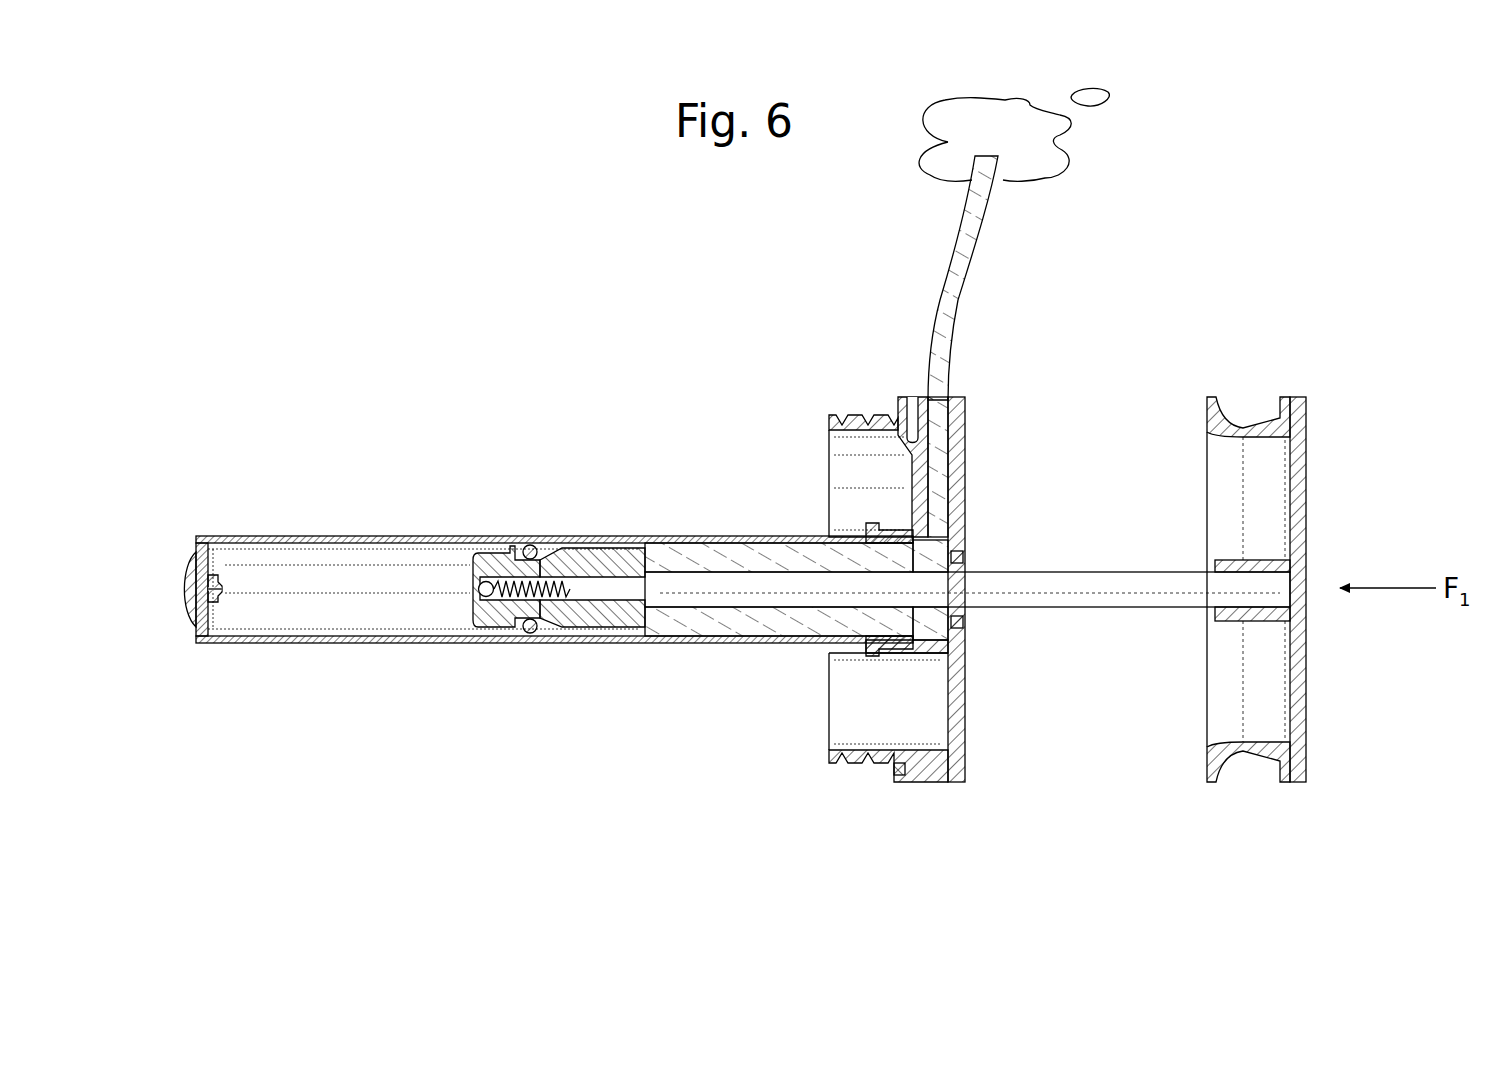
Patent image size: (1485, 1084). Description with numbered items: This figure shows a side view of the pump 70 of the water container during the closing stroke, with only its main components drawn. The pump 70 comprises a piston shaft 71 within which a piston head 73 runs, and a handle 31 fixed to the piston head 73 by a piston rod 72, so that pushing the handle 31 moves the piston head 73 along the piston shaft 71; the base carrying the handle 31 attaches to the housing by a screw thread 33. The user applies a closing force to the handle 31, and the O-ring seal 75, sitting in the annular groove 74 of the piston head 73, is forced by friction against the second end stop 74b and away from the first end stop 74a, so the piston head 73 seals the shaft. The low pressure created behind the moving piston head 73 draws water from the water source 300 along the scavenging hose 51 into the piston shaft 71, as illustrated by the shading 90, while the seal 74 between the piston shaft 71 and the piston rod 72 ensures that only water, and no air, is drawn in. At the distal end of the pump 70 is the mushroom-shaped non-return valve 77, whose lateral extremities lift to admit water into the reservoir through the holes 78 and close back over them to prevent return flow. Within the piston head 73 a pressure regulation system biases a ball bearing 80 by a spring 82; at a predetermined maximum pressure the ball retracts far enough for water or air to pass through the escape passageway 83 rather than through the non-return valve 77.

The water source 300 is at (967, 147).
The scavenging hose 51 is at (958, 287).
The pump 70 is at (662, 362).
The piston shaft 71 is at (365, 643).
The non-return valve 77 is at (192, 594).
The holes 78 is at (210, 575).
The piston head 73 is at (493, 560).
The ball 80 is at (483, 582).
The spring 82 is at (498, 600).
The seal 74 is at (529, 545).
The first end stop 74a is at (512, 632).
The O-ring seal 75 is at (532, 630).
The second end stop 74b is at (550, 630).
The escape passageway 83 is at (566, 578).
The shading 90 is at (747, 628).
The piston rod 72 is at (1100, 585).
The screw thread 33 is at (856, 418).
The handle 31 is at (1298, 412).